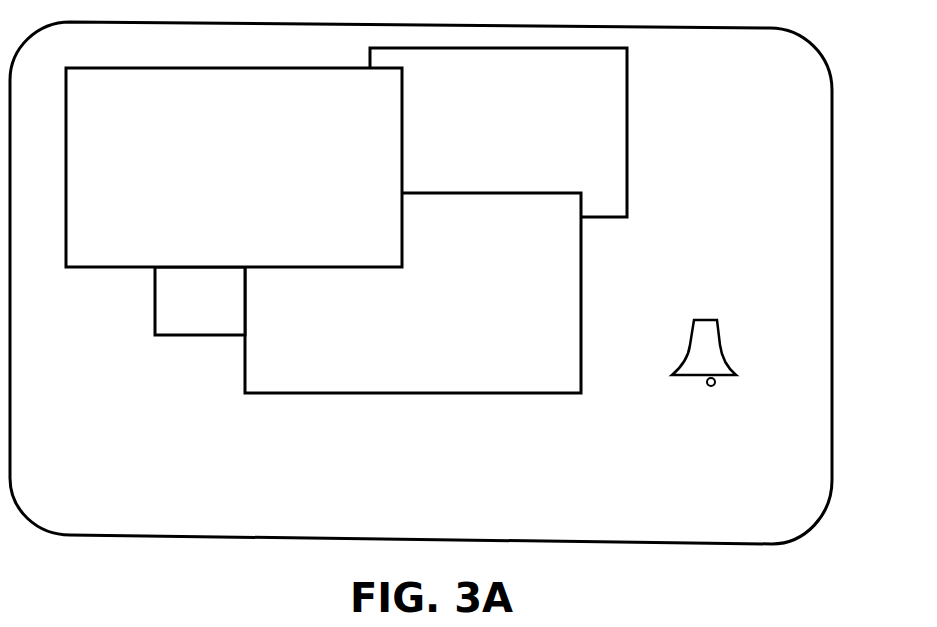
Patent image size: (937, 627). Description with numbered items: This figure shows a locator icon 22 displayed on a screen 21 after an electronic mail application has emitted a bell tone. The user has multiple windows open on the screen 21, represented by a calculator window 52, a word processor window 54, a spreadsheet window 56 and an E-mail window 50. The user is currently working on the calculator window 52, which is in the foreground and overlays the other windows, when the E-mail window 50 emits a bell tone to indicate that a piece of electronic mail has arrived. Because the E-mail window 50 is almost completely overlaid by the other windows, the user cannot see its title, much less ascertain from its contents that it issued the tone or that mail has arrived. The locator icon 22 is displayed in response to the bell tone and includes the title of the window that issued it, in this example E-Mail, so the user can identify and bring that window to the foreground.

The screen 21 is at (826, 68).
The locator icon 22 is at (703, 310).
The E-mail window 50 is at (155, 335).
The calculator window 52 is at (66, 92).
The word processor window 54 is at (627, 87).
The spreadsheet window 56 is at (565, 395).